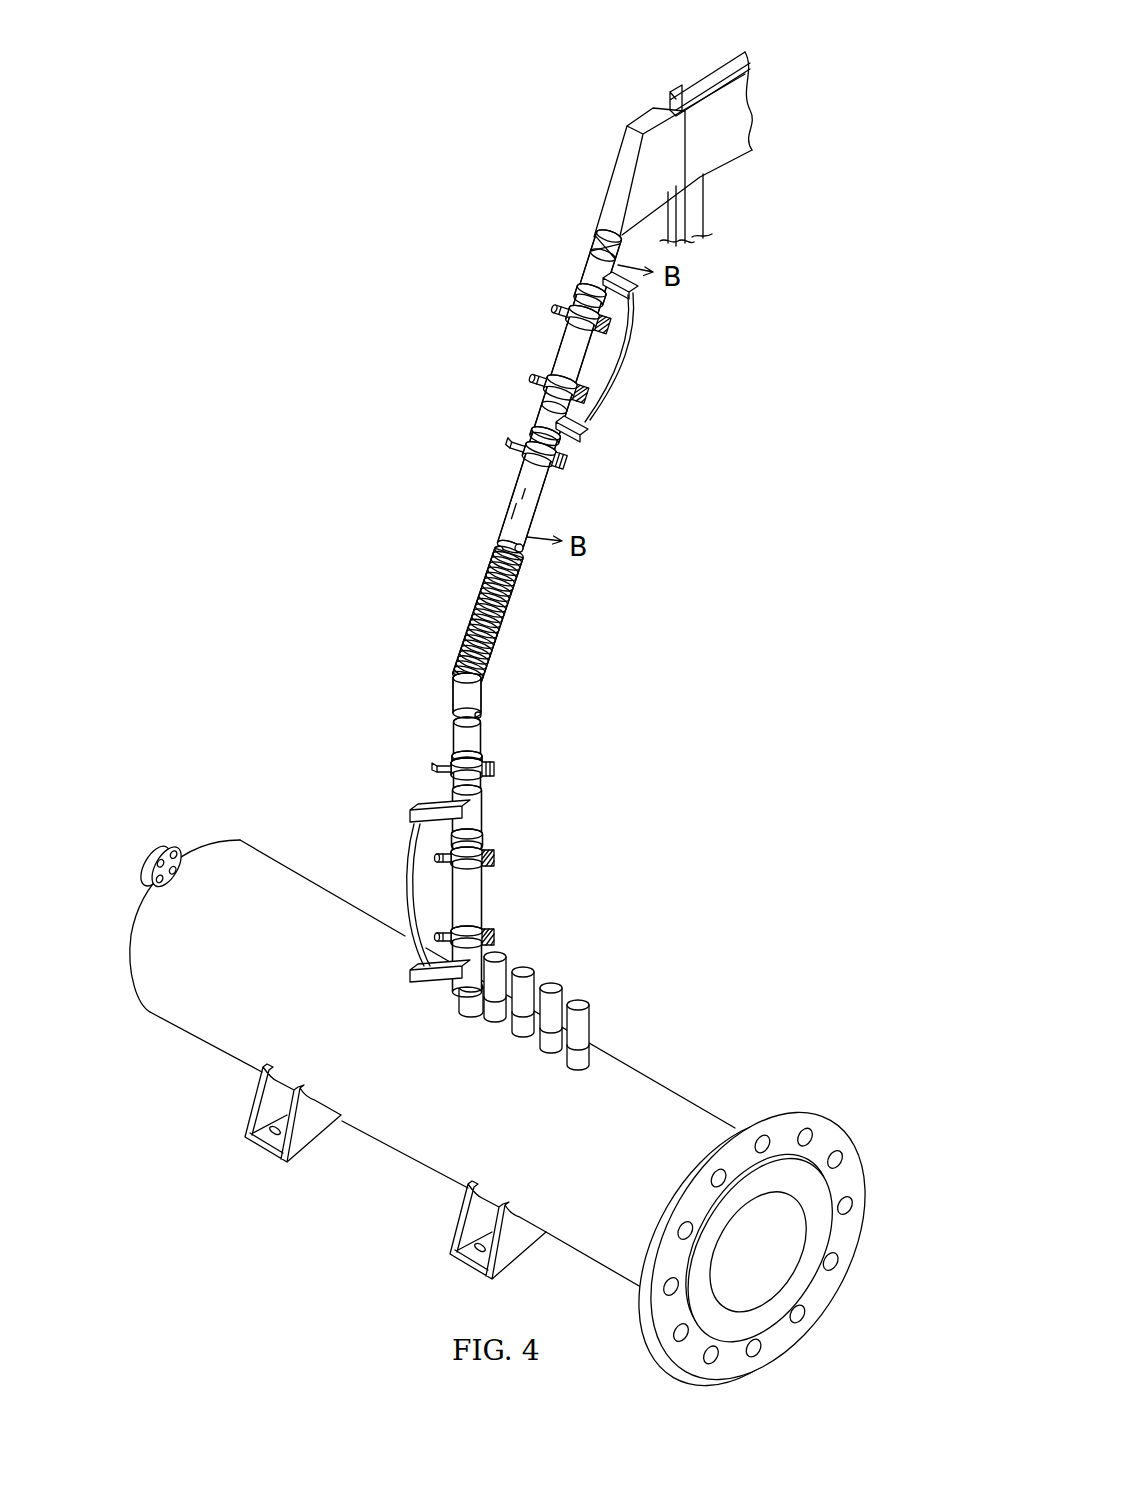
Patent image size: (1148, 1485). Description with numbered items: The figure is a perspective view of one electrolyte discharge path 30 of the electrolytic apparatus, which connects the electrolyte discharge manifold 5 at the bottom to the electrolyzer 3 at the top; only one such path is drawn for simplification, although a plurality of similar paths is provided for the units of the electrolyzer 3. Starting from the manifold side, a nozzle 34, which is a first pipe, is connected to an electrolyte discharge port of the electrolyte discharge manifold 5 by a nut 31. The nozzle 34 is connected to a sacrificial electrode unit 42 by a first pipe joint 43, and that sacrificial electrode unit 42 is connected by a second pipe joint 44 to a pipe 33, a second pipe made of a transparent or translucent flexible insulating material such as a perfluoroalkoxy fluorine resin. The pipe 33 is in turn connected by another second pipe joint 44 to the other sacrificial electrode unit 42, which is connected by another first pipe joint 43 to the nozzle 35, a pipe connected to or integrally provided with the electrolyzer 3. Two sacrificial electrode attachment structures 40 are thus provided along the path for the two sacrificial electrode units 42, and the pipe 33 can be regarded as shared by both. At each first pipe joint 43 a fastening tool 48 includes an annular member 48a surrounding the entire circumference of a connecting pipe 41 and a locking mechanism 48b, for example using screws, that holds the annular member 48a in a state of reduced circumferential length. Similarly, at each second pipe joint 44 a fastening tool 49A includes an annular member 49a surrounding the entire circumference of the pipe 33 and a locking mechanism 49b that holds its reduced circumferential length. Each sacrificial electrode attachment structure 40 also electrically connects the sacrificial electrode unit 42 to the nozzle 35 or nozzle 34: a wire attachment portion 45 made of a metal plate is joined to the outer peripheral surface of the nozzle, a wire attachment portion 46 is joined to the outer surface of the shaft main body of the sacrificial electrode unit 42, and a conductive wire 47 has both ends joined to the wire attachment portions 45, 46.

The electrolyzer 3 is at (717, 67).
The electrolyte discharge manifold 5 is at (393, 1153).
The electrolyte discharge path 30 is at (375, 511).
The nut 31 is at (517, 1037).
The pipe 33 is at (523, 540).
The nozzle 34 is at (470, 987).
The nozzle 35 is at (591, 288).
The sacrificial electrode attachment structure 40 is at (546, 266).
The connecting pipe 41 is at (603, 312).
The sacrificial electrode unit 42 is at (543, 425).
The first pipe joint 43 is at (828, 293).
The second pipe joint 44 is at (592, 514).
The wire attachment portion 45 is at (633, 288).
The wire attachment portion 46 is at (573, 427).
The wire 47 is at (592, 430).
The fastening tool 48 is at (542, 378).
The annular member 48a is at (603, 332).
The locking mechanism 48b is at (557, 317).
The fastening tool 49A is at (525, 445).
The annular member 49a is at (556, 458).
The locking mechanism 49b is at (515, 456).